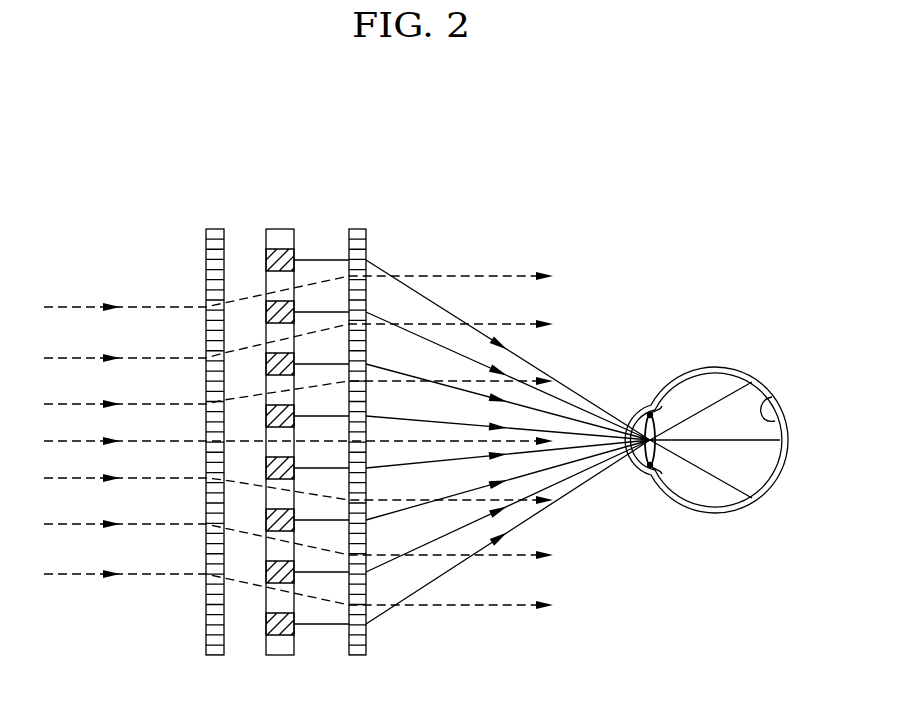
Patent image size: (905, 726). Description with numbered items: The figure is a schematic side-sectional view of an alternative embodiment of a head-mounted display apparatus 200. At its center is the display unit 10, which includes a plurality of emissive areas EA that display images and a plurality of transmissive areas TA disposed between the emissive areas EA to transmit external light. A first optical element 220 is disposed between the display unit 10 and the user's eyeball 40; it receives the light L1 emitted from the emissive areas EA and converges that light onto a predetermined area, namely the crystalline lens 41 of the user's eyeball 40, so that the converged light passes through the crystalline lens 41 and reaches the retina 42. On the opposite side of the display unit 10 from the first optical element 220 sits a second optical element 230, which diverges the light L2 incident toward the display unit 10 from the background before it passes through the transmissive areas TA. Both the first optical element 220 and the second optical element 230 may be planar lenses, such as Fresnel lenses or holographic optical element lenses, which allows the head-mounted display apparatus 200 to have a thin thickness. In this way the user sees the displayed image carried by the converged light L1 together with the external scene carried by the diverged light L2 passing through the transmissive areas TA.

The head-mounted display apparatus 200 is at (568, 178).
The display unit 10 is at (280, 216).
The second optical element 230 is at (213, 229).
The first optical element 220 is at (357, 229).
The emissive area EA is at (265, 253).
The transmissive area TA is at (288, 282).
The light emitted from the emissive areas L1 is at (318, 624).
The light incident from a background L2 is at (148, 578).
The user's eyeball 40 is at (736, 348).
The crystalline lens 41 is at (652, 412).
The retina 42 is at (772, 402).